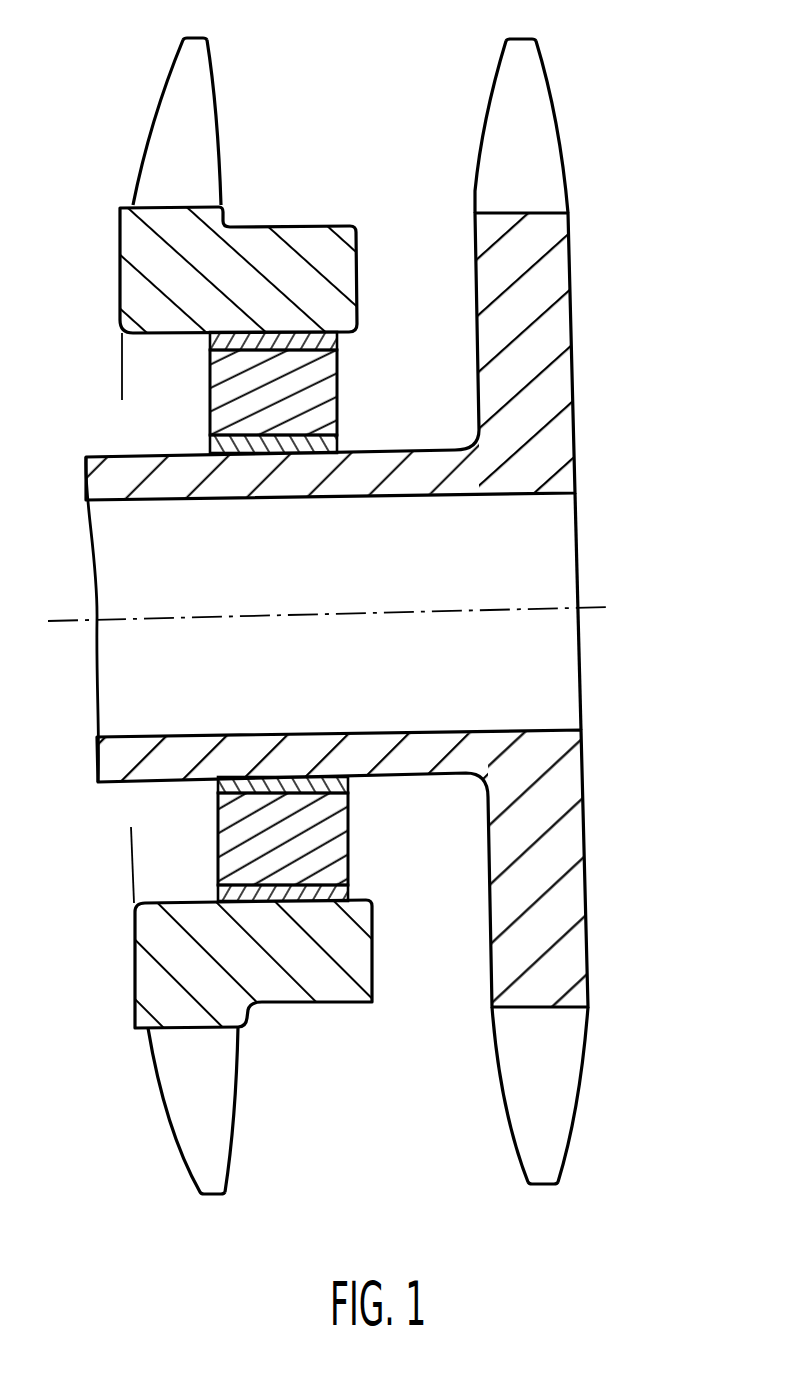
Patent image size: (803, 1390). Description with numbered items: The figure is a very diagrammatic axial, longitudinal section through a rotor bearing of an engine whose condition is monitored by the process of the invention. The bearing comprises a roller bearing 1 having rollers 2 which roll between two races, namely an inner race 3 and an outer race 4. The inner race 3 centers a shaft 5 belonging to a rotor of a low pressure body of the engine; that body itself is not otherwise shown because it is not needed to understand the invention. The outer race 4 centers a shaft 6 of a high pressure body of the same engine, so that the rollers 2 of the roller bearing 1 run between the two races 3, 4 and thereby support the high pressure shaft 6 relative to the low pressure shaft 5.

The roller bearing 1 is at (345, 616).
The rollers 2 is at (323, 382).
The inner race 3 is at (323, 442).
The outer race 4 is at (323, 340).
The shaft 5 is at (560, 383).
The shaft 6 is at (300, 235).